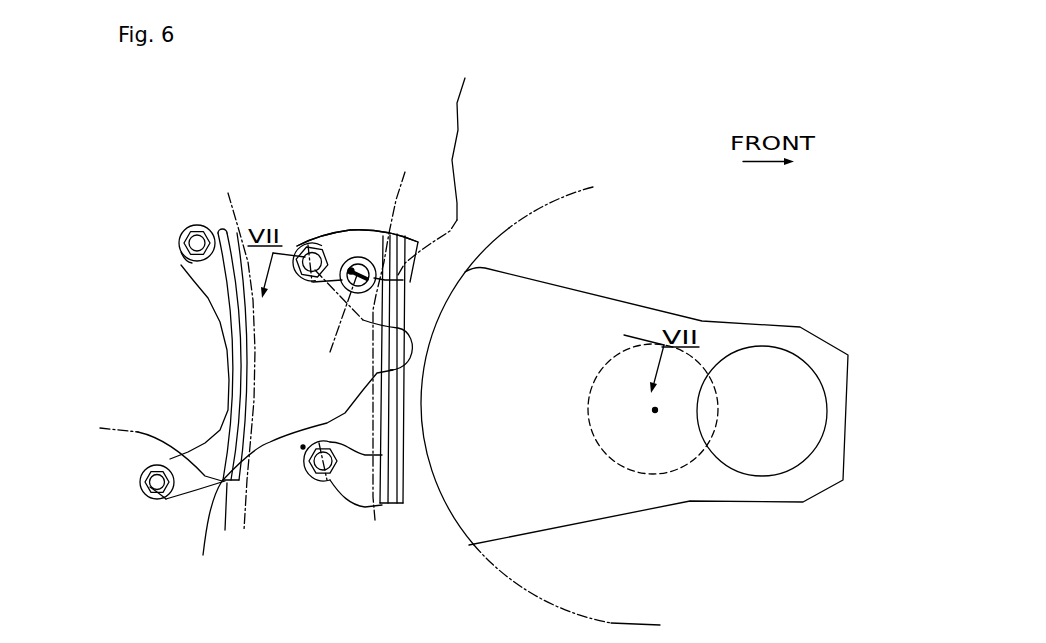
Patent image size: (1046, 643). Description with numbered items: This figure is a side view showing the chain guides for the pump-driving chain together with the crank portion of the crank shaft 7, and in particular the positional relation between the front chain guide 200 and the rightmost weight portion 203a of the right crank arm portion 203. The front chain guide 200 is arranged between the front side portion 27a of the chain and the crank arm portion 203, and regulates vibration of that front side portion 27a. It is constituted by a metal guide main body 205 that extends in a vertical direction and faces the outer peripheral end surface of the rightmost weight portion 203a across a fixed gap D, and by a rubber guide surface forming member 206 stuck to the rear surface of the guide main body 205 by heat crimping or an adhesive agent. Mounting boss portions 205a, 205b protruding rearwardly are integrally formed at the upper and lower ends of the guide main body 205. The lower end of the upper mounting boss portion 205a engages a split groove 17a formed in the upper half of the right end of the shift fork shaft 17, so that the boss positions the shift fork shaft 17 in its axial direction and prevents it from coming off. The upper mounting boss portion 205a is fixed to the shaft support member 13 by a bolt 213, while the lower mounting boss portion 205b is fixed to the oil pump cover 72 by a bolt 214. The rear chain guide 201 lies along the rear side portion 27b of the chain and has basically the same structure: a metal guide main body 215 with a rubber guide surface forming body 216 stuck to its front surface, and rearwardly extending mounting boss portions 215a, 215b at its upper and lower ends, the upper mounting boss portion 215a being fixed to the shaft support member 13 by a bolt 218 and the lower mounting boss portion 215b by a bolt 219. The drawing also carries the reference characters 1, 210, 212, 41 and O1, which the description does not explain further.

The rear side chain guide 201 is at (181, 201).
The rear side portion of the chain 27b is at (228, 200).
The front side chain guide 200 is at (351, 214).
The upper mounting boss portion 205a is at (314, 238).
The shift fork shaft 17 is at (360, 258).
The front side portion of the chain 27a is at (406, 183).
The vehicle body 1 is at (444, 176).
The bolt 218 is at (180, 243).
The bolt 213 is at (302, 245).
The upper mounting boss portion 215a is at (190, 264).
The mounting hole 210 is at (310, 283).
The shaft support member 13 is at (150, 337).
The split groove 17a is at (327, 329).
The oil pump cover 72 is at (302, 446).
The fixed gap D is at (417, 404).
The center of shaft O1 is at (655, 413).
The bolt 219 is at (140, 470).
The lower mounting boss portion 215b is at (150, 488).
The bolt 214 is at (302, 463).
The mounting hole 212 is at (320, 470).
The frame rail 41 is at (173, 523).
The guide main body 215 is at (285, 408).
The guide surface forming body 216 is at (238, 483).
The lower mounting boss portion 205b is at (340, 504).
The guide main body 205 is at (403, 506).
The guide surface forming member 206 is at (378, 507).
The rightmost weight portion 203a is at (484, 527).
The crank arm portion 203 is at (616, 537).
The crank shaft 7 is at (665, 476).